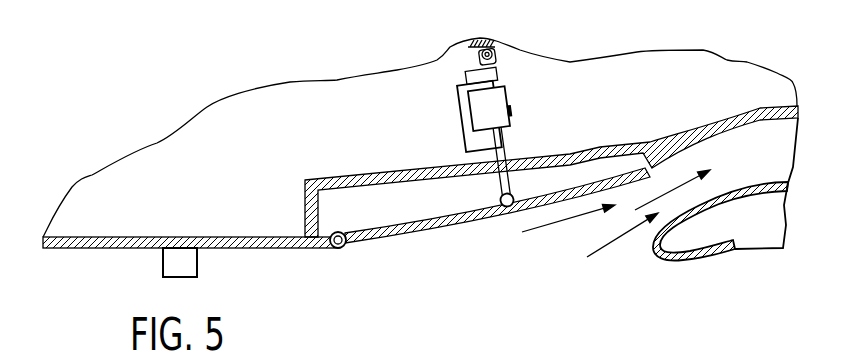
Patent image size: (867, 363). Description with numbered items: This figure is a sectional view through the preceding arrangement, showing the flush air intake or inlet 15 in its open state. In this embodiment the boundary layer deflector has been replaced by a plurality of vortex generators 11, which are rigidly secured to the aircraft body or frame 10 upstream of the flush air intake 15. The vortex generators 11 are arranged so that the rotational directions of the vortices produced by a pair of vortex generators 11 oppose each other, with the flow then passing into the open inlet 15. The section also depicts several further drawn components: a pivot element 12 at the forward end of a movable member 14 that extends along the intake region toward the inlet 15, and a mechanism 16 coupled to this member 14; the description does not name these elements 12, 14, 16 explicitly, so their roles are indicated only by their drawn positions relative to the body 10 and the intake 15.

The aircraft body or frame 10 is at (74, 228).
The vortex generators 11 is at (197, 265).
The pivot joint of flap 12 is at (340, 248).
The movable flap 14 is at (588, 203).
The flush air intake or inlet 15 is at (757, 163).
The actuator 16 is at (497, 100).